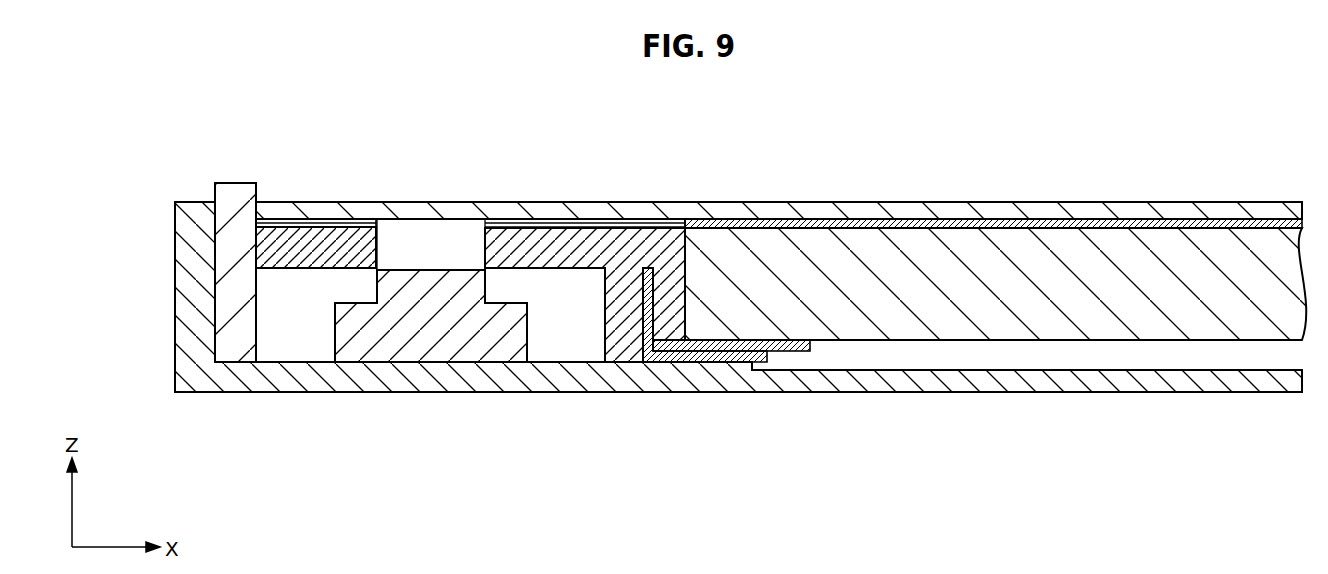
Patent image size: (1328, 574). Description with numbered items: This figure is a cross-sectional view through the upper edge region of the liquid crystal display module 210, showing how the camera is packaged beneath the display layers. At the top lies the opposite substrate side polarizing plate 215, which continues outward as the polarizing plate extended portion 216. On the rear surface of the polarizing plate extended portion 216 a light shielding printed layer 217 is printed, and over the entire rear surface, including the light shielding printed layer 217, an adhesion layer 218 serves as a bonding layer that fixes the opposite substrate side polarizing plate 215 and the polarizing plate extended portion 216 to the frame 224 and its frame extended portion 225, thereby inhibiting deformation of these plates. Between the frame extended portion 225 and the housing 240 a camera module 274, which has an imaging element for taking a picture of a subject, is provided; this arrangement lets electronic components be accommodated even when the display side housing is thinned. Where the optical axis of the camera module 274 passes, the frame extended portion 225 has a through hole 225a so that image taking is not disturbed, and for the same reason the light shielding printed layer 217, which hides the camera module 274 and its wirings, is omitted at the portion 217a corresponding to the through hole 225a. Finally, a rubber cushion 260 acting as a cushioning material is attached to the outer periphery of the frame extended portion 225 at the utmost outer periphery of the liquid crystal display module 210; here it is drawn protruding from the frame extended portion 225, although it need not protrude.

The liquid crystal display module 210 is at (992, 300).
The opposite substrate side polarizing plate 215 is at (932, 210).
The polarizing plate extended portion 216 is at (594, 222).
The light shielding printed layer 217 is at (327, 215).
The portion corresponding to the through hole 217a is at (419, 218).
The adhesion layer 218 is at (813, 223).
The frame 224 is at (710, 353).
The frame extended portion 225 is at (303, 250).
The through hole 225a is at (422, 252).
The housing 240 is at (797, 382).
The rubber cushion 260 is at (232, 205).
The camera module 274 is at (493, 340).